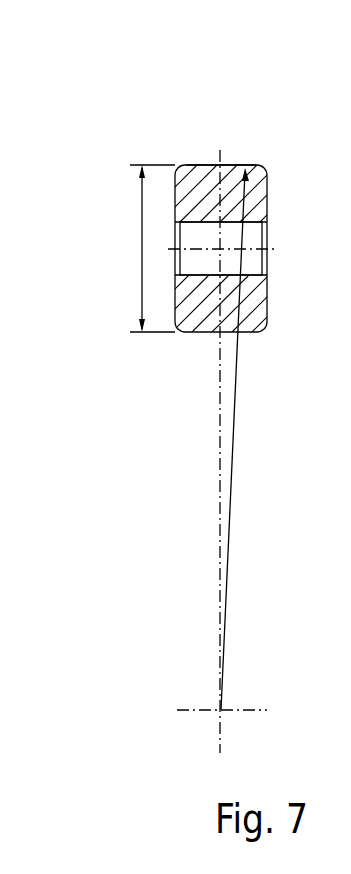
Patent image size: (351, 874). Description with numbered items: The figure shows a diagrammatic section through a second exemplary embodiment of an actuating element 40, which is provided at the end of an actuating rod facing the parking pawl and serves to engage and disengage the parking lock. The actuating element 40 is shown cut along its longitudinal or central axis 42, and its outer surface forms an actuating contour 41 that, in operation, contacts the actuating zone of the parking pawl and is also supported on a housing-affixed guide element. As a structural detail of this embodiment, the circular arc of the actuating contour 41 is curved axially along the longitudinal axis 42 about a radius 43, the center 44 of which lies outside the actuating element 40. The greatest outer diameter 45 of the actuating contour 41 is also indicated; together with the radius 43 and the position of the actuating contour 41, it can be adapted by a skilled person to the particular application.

The actuating element 40 is at (202, 300).
The actuating contour 41 is at (205, 162).
The longitudinal axis of the actuating element 42 is at (200, 238).
The radius 43 is at (237, 398).
The center 44 is at (220, 710).
The greatest outer diameter 45 is at (142, 250).